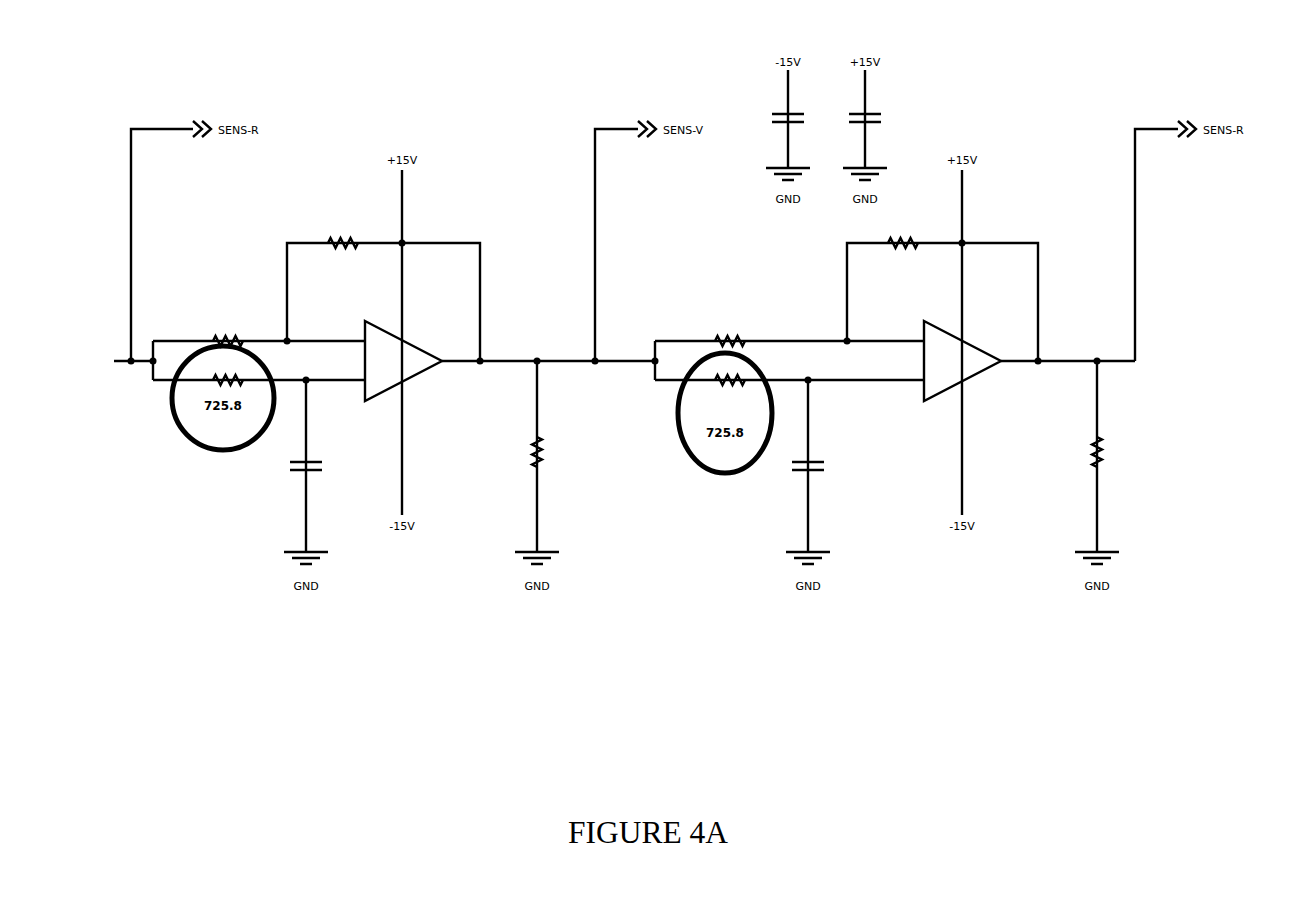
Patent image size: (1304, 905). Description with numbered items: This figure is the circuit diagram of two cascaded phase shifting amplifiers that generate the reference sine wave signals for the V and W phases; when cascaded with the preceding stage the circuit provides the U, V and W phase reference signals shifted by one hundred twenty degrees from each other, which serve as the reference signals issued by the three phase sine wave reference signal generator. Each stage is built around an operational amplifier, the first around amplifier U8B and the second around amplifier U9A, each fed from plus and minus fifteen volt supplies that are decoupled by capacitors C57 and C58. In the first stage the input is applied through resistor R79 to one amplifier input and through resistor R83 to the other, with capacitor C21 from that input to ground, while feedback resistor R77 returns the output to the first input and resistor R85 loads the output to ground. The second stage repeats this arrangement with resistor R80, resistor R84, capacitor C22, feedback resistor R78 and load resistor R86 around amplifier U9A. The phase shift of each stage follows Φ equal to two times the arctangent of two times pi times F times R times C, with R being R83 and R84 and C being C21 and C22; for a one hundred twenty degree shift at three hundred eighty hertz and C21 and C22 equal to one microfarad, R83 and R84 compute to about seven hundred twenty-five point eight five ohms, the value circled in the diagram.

The resistor R79 1K R79 is at (227, 314).
The resistor R83 is at (228, 373).
The feedback resistor R77 1K R77 is at (383, 292).
The capacitor C21 is at (319, 472).
The operational amplifier U8B LM7332 U8B is at (437, 366).
The resistor R85 54.9K R85 is at (547, 462).
The decoupling capacitor C57 is at (802, 125).
The decoupling capacitor C58 is at (879, 125).
The resistor R80 1K R80 is at (730, 317).
The resistor R84 is at (729, 394).
The feedback resistor R78 1K R78 is at (942, 292).
The capacitor C22 is at (821, 472).
The operational amplifier U9A LM7332 U9A is at (996, 366).
The resistor R86 54.9K R86 is at (1107, 462).